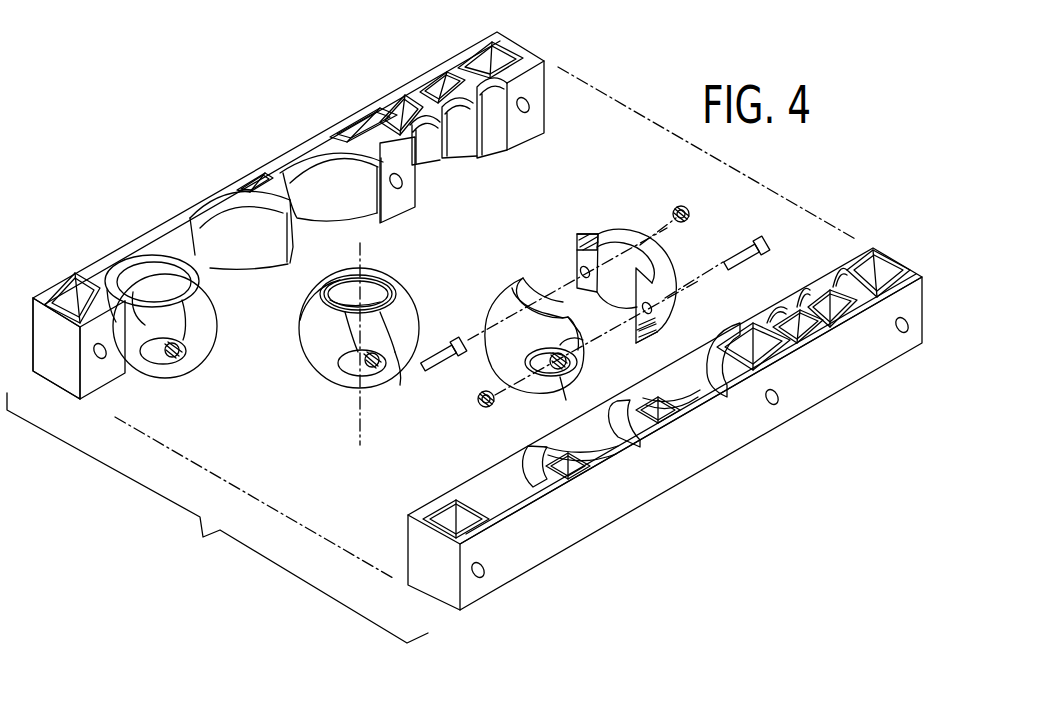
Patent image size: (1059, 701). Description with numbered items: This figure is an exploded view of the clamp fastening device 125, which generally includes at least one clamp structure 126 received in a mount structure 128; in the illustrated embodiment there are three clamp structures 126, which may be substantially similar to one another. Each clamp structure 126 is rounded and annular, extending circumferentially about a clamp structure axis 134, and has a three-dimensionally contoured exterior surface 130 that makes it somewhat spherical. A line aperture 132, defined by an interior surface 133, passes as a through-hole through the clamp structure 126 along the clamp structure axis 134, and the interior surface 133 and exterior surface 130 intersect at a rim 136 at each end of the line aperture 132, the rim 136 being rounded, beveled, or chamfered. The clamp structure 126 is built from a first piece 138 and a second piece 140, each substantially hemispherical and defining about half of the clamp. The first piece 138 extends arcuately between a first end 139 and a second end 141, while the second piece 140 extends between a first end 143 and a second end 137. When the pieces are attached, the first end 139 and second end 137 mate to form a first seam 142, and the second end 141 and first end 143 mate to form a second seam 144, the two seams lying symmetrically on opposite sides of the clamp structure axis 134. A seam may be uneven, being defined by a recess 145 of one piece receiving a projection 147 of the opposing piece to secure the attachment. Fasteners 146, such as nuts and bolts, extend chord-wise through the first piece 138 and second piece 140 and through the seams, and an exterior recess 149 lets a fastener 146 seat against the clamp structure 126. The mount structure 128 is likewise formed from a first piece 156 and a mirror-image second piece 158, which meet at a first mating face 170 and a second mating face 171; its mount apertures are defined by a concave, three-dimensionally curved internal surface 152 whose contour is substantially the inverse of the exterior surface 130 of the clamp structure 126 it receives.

The clamp fastening device 125 is at (163, 144).
The clamp structure 126 is at (162, 392).
The mount structure 128 is at (432, 355).
The exterior surface 130 is at (344, 347).
The line aperture 132 is at (379, 287).
The interior surface 133 is at (350, 288).
The clamp structure axis 134 is at (358, 426).
The rim 136 is at (322, 280).
The second end 137 is at (640, 350).
The first piece 138 is at (513, 345).
The first end 139 is at (587, 355).
The second piece 140 is at (676, 243).
The second end 141 is at (540, 288).
The first seam 142 is at (400, 385).
The first end 143 is at (582, 262).
The second seam 144 is at (337, 364).
The recess 145 is at (656, 318).
The fasteners 146 is at (448, 343).
The projection 147 is at (628, 322).
The exterior recess 149 is at (565, 395).
The internal surface 152 is at (230, 232).
The first piece 156 is at (808, 430).
The second piece 158 is at (292, 122).
The first mating face 170 is at (440, 500).
The second mating face 171 is at (103, 373).